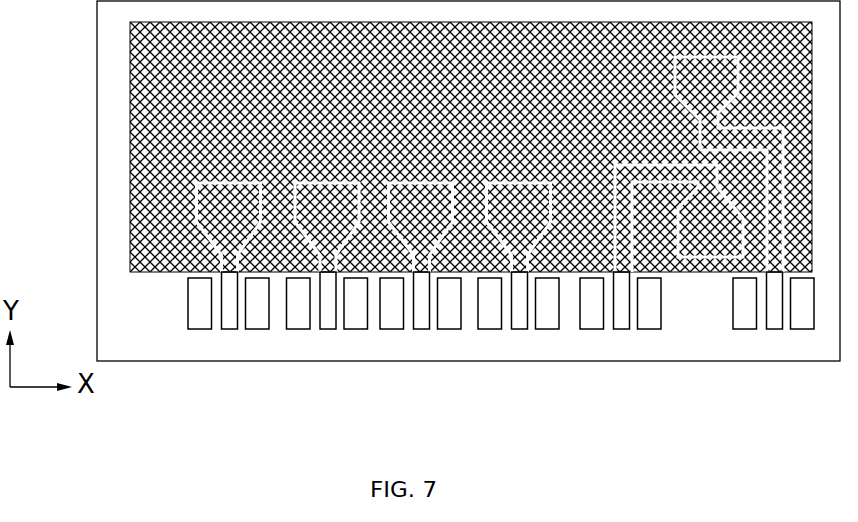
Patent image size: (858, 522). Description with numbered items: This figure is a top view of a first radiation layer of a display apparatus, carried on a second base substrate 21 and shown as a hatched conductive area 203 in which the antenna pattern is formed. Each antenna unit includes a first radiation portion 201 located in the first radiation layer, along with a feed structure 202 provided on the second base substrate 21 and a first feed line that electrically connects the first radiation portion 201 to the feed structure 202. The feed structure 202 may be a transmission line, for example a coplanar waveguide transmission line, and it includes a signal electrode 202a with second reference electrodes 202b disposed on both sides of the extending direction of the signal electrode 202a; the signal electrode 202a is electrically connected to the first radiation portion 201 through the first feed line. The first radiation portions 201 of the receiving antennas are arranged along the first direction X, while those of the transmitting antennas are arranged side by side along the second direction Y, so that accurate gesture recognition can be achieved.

The second base substrate 21 is at (123, 48).
The conductive layer 203 is at (213, 116).
The first radiation portion 201 is at (217, 217).
The feed structure 202 is at (480, 370).
The signal electrode 202a is at (227, 326).
The second reference electrodes 202b is at (197, 326).